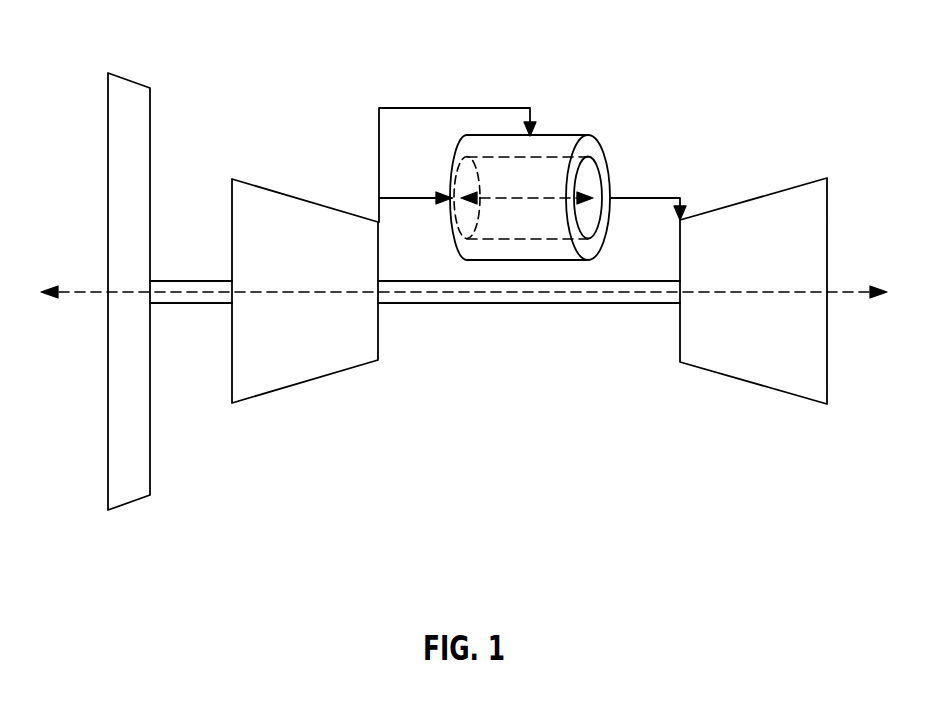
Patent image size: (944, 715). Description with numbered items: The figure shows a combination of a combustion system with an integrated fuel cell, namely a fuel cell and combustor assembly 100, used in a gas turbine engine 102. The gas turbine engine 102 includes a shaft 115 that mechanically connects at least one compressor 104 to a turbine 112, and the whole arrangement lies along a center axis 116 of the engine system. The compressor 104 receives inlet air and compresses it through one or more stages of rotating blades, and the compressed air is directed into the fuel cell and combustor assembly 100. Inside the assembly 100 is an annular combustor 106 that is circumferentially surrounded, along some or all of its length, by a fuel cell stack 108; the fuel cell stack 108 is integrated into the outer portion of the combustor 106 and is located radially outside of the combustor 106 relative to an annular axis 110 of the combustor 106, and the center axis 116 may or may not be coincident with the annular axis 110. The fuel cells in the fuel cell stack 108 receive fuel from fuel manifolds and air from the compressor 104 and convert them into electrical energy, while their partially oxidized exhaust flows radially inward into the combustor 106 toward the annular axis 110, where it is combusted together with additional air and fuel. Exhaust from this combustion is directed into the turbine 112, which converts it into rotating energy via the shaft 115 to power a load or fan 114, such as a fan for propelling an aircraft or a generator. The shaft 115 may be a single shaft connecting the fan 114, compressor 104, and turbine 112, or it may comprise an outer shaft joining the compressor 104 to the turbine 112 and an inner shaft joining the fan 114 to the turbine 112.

The fuel cell and combustor assembly 100 is at (532, 178).
The gas turbine engine 102 is at (464, 297).
The compressor 104 is at (307, 383).
The annular combustor 106 is at (536, 211).
The fuel cell stack 108 is at (540, 260).
The annular axis 110 is at (450, 53).
The turbine 112 is at (752, 383).
The load or fan 114 is at (128, 80).
The shaft 115 is at (456, 303).
The center axis 116 is at (837, 288).